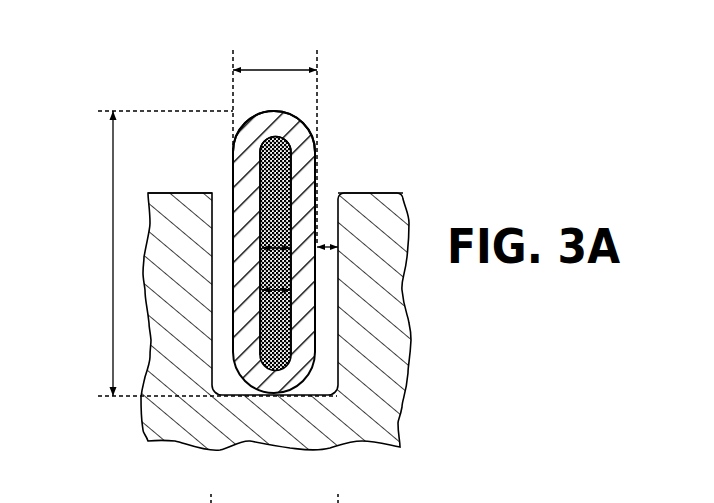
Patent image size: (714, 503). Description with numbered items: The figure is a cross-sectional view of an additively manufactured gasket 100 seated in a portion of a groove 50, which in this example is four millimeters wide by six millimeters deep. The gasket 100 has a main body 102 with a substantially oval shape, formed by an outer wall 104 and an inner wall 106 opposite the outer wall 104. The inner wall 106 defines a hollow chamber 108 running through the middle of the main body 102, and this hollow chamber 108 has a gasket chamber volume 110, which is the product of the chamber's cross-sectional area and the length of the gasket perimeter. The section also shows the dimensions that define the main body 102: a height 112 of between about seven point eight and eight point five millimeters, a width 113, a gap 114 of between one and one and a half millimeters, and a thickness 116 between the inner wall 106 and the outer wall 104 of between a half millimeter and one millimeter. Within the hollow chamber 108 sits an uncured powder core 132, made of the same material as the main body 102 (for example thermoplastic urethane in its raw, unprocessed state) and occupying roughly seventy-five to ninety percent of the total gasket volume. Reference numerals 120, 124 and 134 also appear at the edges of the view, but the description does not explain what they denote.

The gasket 100 is at (335, 98).
The main body 102 is at (313, 142).
The outer wall 104 is at (240, 350).
The inner wall 106 is at (267, 342).
The hollow chamber 108 is at (278, 218).
The gasket chamber volume 110 is at (300, 208).
The height 112 is at (113, 258).
The width 113 is at (278, 69).
The gap 114 is at (277, 292).
The thickness 116 is at (340, 250).
The slot width 120 is at (374, 498).
The slot depth 124 is at (253, 498).
The uncured powder core 132 is at (174, 196).
The fluid flow direction 134 is at (271, 194).
The groove 50 is at (385, 200).